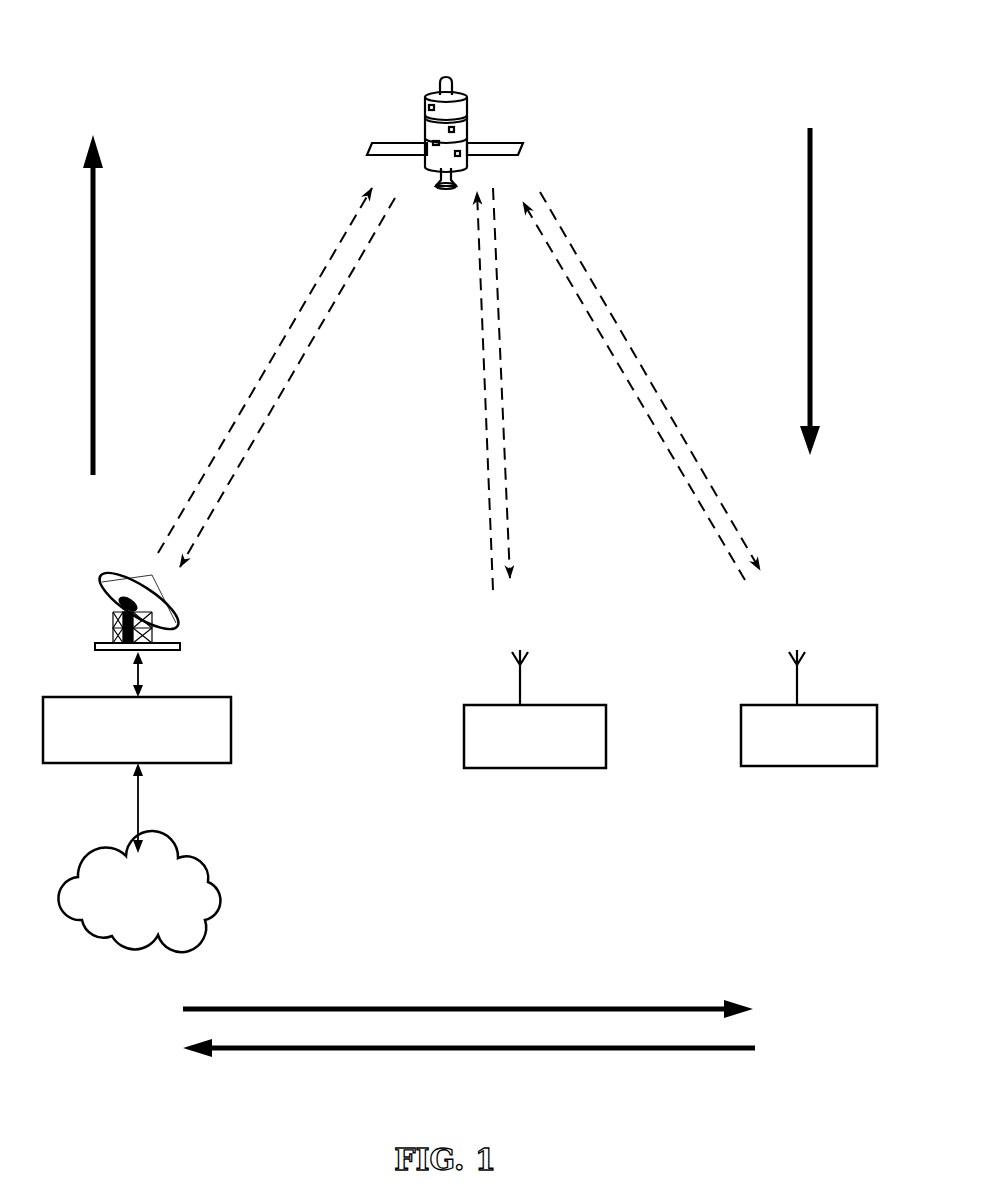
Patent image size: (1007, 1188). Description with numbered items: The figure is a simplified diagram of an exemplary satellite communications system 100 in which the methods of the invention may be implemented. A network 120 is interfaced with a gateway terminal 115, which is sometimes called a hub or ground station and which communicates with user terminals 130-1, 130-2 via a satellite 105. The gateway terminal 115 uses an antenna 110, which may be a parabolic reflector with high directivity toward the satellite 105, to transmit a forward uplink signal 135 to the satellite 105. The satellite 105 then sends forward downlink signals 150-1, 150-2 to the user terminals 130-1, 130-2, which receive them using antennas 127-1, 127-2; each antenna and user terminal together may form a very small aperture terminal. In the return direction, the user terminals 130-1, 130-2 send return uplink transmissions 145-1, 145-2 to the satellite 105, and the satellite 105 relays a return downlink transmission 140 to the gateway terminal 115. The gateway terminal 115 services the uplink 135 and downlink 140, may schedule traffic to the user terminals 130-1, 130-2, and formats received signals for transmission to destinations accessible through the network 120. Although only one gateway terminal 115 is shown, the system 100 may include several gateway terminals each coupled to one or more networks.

The satellite communications system 100 is at (619, 140).
The satellite 105 is at (448, 78).
The antenna 110 is at (176, 626).
The gateway terminal 115 is at (231, 728).
The network 120 is at (208, 886).
The antenna 127-1 is at (470, 655).
The antenna 127-2 is at (748, 660).
The user terminal 130-1 is at (464, 735).
The user terminal 130-2 is at (741, 735).
The forward uplink signal 135 is at (267, 370).
The return downlink transmission 140 is at (330, 307).
The return uplink transmission 145-1 is at (485, 402).
The return uplink transmission 145-2 is at (633, 394).
The forward downlink signal 150-1 is at (505, 480).
The forward downlink signal 150-2 is at (597, 290).